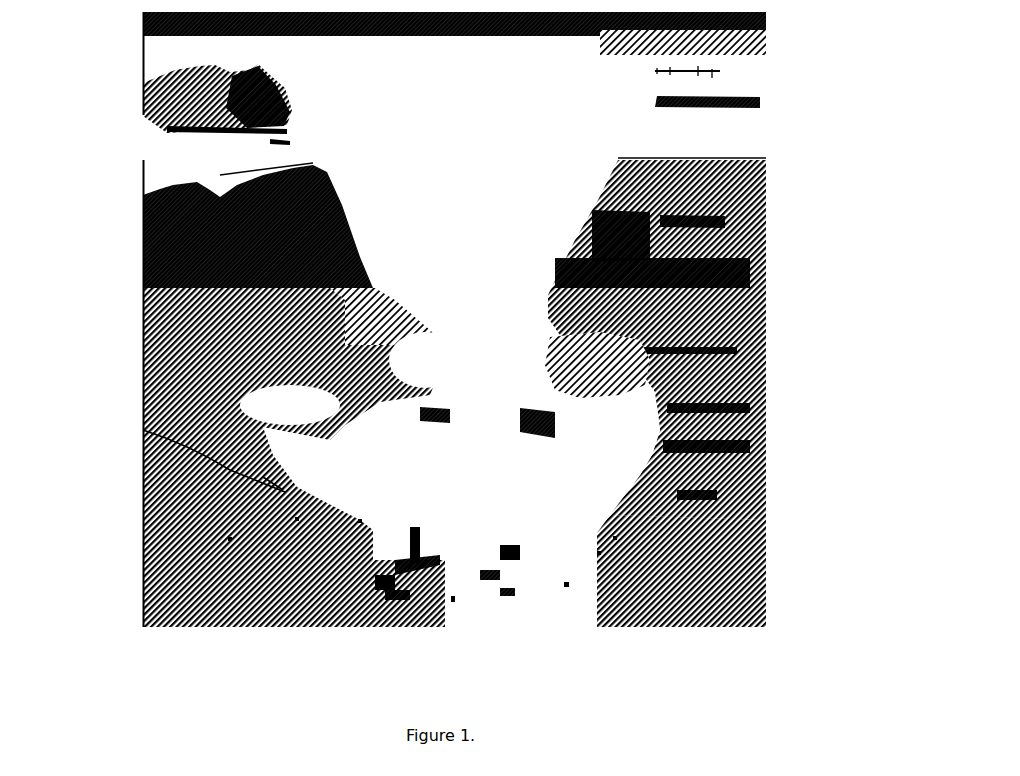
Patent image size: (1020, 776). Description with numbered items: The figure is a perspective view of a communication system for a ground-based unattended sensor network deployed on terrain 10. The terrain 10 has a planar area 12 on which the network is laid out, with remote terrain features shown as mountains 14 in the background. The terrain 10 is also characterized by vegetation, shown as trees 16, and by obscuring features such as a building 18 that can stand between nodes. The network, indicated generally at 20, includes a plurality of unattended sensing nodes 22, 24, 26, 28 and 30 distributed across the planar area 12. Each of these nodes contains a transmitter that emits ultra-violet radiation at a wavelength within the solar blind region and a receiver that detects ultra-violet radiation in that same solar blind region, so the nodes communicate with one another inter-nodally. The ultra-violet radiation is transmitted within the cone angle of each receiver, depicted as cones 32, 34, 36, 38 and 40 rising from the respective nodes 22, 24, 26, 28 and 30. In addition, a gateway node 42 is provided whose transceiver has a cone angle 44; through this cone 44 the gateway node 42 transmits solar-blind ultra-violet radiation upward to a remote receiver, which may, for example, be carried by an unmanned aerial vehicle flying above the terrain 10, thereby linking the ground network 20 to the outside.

The terrain 10 is at (713, 318).
The planar area 12 is at (710, 538).
The mountains 14 is at (160, 211).
The trees 16 is at (720, 72).
The building 18 is at (407, 600).
The network 20 is at (230, 540).
The node 22 is at (297, 520).
The node 24 is at (393, 553).
The node 26 is at (453, 603).
The node 28 is at (567, 587).
The node 30 is at (615, 540).
The cone 32 is at (265, 458).
The cone 34 is at (360, 522).
The cone 36 is at (482, 578).
The cone 38 is at (600, 553).
The cone 40 is at (663, 429).
The gateway node 42 is at (455, 428).
The cone angle of transceiver 44 is at (618, 157).